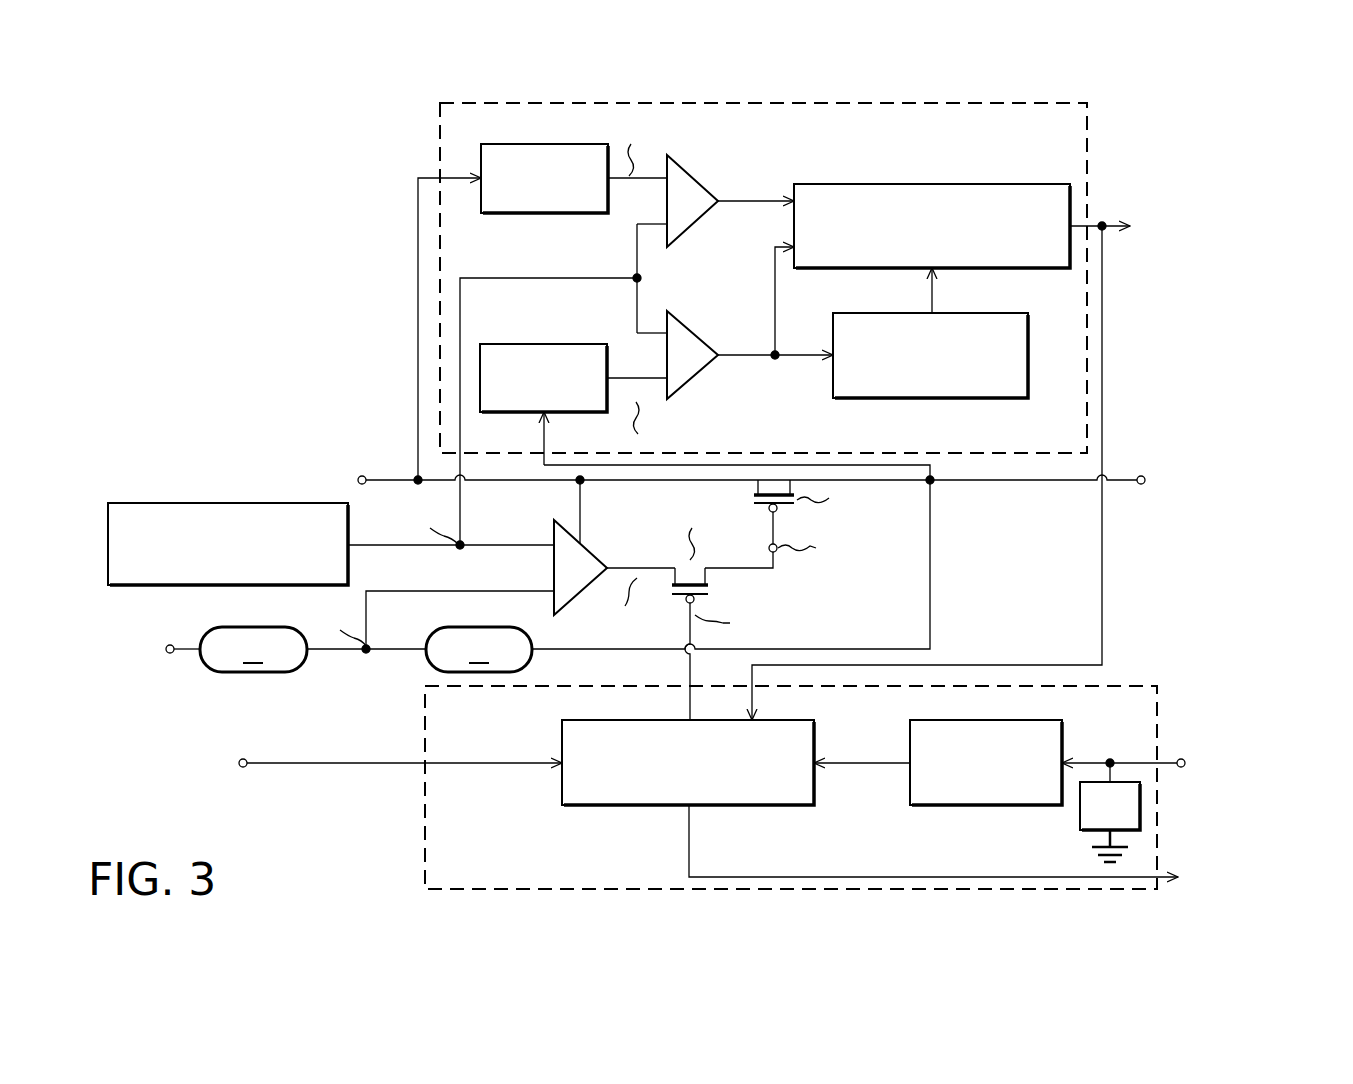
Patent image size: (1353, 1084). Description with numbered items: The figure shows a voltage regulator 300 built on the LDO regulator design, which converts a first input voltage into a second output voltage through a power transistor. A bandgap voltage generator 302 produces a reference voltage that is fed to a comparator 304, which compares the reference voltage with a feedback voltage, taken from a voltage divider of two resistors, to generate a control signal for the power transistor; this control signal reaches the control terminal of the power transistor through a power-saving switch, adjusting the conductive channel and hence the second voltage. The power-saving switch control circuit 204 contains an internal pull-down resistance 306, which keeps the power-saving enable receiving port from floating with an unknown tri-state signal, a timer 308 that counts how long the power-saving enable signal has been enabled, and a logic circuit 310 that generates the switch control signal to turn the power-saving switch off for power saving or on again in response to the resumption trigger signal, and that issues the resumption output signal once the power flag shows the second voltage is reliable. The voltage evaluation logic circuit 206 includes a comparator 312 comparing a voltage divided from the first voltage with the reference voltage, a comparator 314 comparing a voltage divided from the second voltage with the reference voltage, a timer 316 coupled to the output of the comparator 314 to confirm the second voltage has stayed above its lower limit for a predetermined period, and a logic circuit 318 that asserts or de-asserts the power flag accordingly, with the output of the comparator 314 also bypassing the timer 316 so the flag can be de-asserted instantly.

The voltage regulator 300 is at (157, 147).
The voltage evaluation logic circuit 206 is at (440, 135).
The power-saving switch control circuit 204 is at (425, 713).
The bandgap voltage generator 302 is at (112, 503).
The comparator 304 is at (553, 520).
The internal pull-down resistance 306 is at (1088, 821).
The timer 308 is at (910, 738).
The logic circuit 310 is at (562, 738).
The comparator 312 is at (698, 174).
The comparator 314 is at (698, 330).
The timer 316 is at (836, 313).
The logic circuit 318 is at (794, 184).